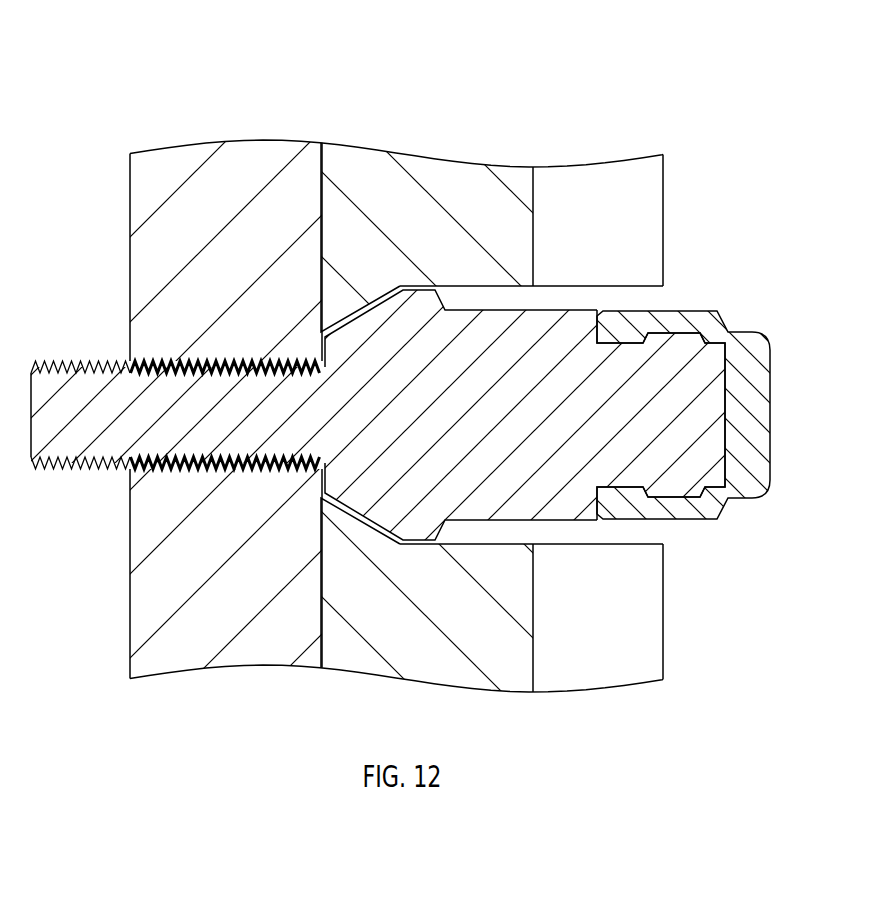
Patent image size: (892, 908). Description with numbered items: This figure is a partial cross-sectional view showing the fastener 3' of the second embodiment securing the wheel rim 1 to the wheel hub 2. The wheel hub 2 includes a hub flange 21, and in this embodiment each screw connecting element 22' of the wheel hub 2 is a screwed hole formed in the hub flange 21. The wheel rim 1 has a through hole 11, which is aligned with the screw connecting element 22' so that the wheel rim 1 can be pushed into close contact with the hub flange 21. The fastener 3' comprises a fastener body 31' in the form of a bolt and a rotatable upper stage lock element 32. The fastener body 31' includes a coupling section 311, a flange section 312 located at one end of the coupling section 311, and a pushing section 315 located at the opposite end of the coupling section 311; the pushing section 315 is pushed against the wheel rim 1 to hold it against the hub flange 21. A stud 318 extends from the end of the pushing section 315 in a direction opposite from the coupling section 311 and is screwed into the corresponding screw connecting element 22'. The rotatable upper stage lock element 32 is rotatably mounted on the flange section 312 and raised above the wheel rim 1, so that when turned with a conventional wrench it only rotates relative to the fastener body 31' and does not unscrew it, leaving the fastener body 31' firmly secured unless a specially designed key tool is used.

The wheel hub 2 is at (209, 118).
The wheel rim 1 is at (365, 175).
The hub flange 21 is at (193, 263).
The screw connecting element 22' is at (199, 449).
The stud 318 is at (135, 417).
The fastener 3' is at (378, 416).
The fastener body 31' is at (461, 231).
The coupling section 311 is at (492, 327).
The flange section 312 is at (637, 382).
The pushing section 315 is at (380, 505).
The through hole 11 is at (480, 533).
The rotatable upper stage lock element 32 is at (762, 321).